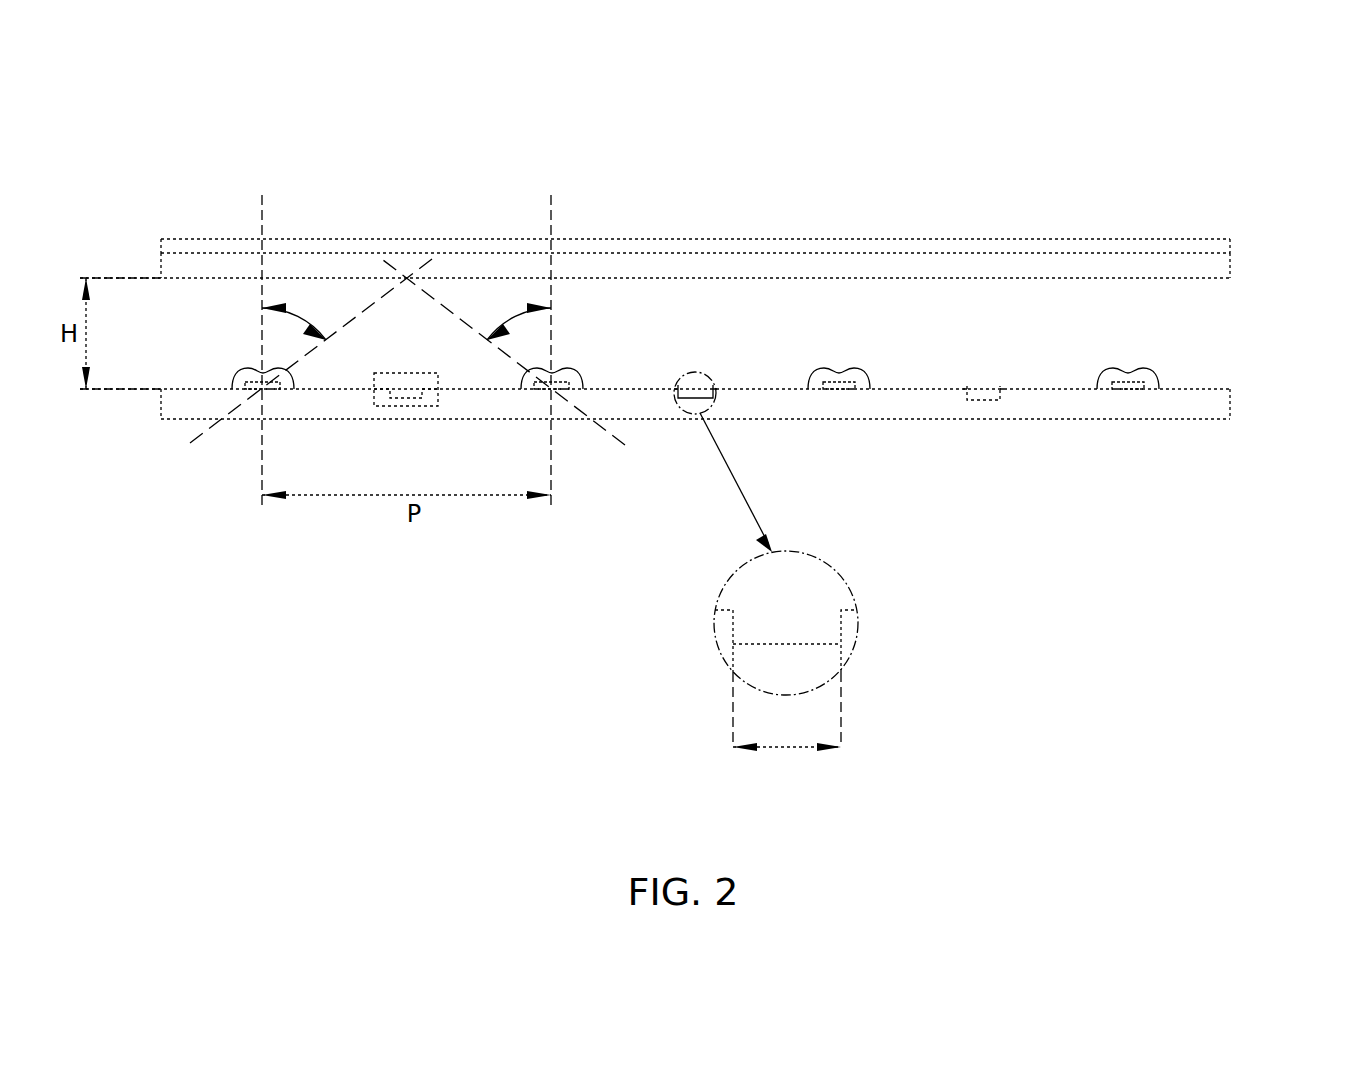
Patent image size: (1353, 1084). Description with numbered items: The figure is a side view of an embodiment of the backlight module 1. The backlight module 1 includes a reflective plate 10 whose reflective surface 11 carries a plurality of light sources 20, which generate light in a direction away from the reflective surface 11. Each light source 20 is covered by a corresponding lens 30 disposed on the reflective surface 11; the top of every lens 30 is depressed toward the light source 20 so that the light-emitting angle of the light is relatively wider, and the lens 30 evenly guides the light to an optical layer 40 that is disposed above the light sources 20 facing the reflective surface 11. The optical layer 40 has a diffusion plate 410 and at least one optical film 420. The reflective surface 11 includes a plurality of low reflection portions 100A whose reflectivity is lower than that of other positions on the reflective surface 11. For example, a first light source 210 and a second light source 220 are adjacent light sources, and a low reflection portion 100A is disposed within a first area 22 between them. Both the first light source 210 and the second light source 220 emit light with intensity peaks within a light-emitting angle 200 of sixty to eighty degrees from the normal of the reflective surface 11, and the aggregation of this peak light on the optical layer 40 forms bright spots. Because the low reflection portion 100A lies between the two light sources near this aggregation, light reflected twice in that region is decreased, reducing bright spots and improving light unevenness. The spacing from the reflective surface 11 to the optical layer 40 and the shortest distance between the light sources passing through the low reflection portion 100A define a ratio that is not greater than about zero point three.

The backlight module 1 is at (178, 135).
The reflective plate 10 is at (1243, 403).
The reflective surface 11 is at (1215, 386).
The light source 20 is at (838, 390).
The first area 22 is at (438, 400).
The lens 30 is at (863, 375).
The optical layer 40 is at (708, 262).
The diffusion plate 410 is at (684, 293).
The optical film 420 is at (1223, 247).
The low reflection portion 100A is at (978, 378).
The light-emitting angle 200 is at (513, 313).
The first light source 210 is at (243, 388).
The second light source 220 is at (568, 387).